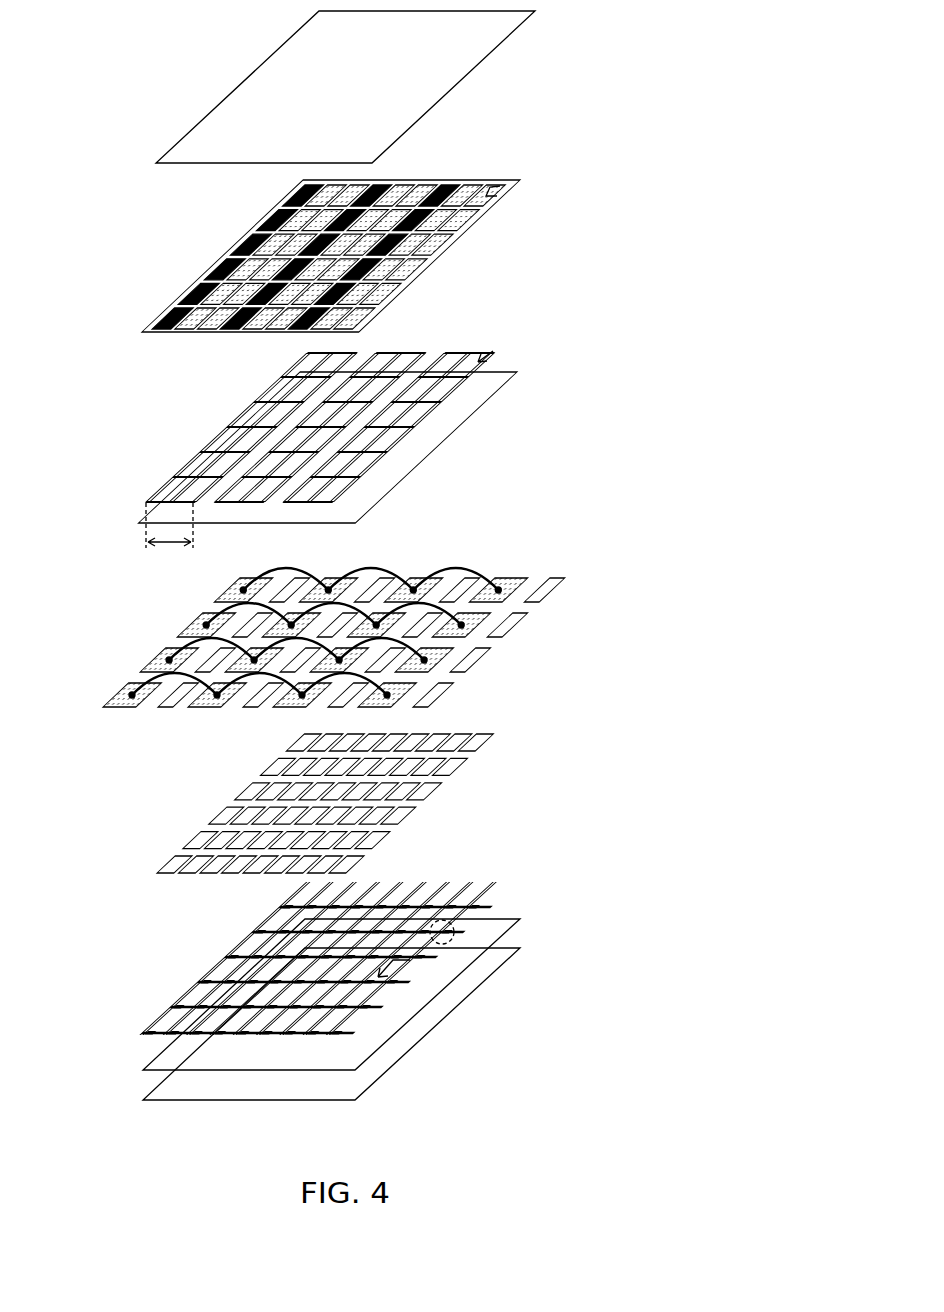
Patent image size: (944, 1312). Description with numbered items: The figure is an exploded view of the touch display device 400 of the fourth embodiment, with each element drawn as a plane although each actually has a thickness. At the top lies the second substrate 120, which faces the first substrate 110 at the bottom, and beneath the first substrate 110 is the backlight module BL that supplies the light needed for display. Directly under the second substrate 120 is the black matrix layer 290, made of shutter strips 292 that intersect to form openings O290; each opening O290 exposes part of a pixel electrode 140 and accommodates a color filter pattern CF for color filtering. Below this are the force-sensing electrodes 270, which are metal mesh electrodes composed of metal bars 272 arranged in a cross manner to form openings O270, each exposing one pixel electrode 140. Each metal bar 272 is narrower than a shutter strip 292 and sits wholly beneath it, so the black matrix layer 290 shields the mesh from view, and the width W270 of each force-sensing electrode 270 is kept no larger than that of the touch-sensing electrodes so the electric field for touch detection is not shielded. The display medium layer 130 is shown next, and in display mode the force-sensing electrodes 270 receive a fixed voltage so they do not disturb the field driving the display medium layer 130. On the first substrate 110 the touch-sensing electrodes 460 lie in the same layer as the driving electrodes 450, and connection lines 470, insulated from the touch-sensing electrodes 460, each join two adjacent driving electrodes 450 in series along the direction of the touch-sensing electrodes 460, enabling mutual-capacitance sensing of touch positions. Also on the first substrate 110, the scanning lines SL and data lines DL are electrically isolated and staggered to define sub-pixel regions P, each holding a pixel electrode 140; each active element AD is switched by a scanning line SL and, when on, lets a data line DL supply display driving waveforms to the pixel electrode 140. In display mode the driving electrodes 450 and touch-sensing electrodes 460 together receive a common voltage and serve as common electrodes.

The second substrate 120 is at (422, 93).
The black matrix layer 290 is at (265, 257).
The shutter strips 292 is at (212, 279).
The openings O290 is at (495, 185).
The color filter pattern CF is at (407, 268).
The force-sensing electrodes 270 is at (274, 427).
The metal bars 272 is at (193, 458).
The openings O270 is at (493, 353).
The width of force-sensing electrode W270 is at (168, 539).
The display medium layer 130 is at (422, 444).
The driving electrodes 450 is at (500, 598).
The touch-sensing electrodes 460 is at (465, 583).
The connection lines 470 is at (480, 579).
The pixel electrodes 140 is at (417, 790).
The data lines DL is at (490, 885).
The scanning lines SL is at (490, 907).
The active elements AD is at (453, 929).
The sub-pixel regions P is at (410, 960).
The first substrate 110 is at (172, 1053).
The backlight module BL is at (172, 1082).
The touch display device 400 is at (555, 1097).